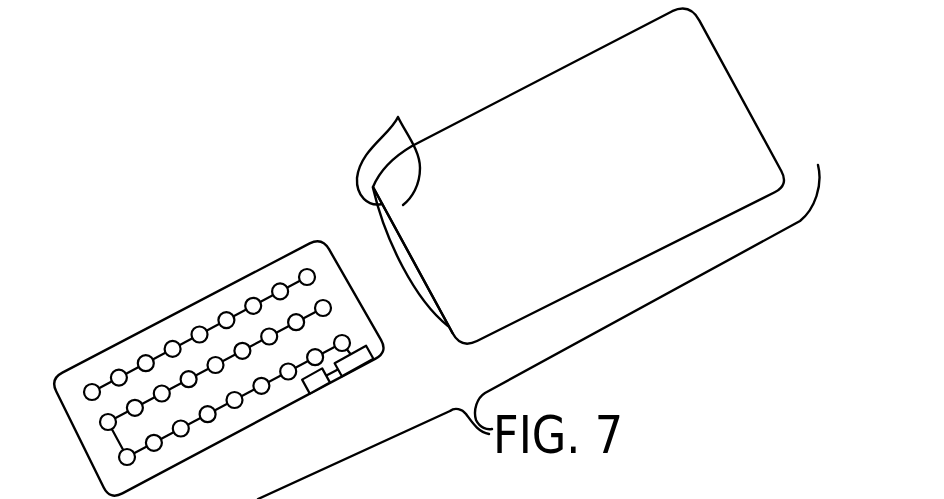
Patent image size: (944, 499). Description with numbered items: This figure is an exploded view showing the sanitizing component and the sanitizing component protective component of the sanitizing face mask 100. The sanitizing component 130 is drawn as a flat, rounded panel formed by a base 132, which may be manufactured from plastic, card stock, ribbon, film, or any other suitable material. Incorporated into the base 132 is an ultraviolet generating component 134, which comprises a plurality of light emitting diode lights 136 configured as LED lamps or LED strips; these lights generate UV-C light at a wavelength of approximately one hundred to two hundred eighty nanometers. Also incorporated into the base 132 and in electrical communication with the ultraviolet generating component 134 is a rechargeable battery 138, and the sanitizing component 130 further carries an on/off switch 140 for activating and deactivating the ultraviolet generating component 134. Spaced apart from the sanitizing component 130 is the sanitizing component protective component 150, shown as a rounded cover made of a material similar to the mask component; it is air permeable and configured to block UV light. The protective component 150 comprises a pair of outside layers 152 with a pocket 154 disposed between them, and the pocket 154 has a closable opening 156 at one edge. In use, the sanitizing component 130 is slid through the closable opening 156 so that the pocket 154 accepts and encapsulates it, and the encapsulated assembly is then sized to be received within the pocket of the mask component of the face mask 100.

The sanitizing face mask 100 is at (288, 112).
The sanitizing component 130 is at (195, 367).
The base 132 is at (115, 477).
The ultraviolet (UV) generating component 134 is at (90, 431).
The light emitting diode (LED) lights 136 is at (123, 367).
The rechargeable battery 138 is at (351, 368).
The on/off switch 140 is at (318, 392).
The sanitizing component protective component 150 is at (569, 206).
The outside layers 152 is at (398, 118).
The pocket 154 is at (412, 242).
The closable opening 156 is at (417, 302).